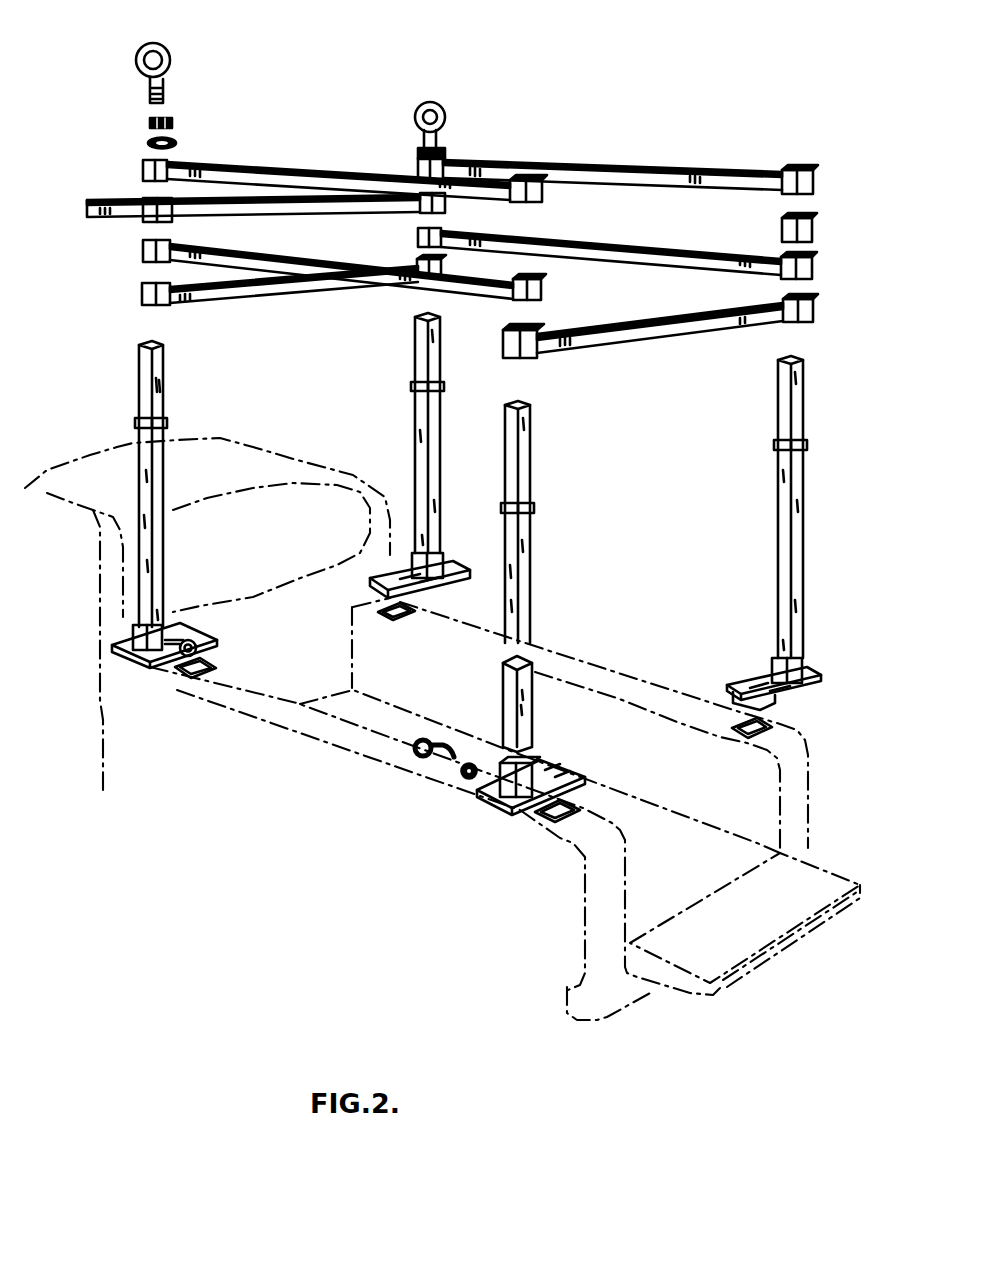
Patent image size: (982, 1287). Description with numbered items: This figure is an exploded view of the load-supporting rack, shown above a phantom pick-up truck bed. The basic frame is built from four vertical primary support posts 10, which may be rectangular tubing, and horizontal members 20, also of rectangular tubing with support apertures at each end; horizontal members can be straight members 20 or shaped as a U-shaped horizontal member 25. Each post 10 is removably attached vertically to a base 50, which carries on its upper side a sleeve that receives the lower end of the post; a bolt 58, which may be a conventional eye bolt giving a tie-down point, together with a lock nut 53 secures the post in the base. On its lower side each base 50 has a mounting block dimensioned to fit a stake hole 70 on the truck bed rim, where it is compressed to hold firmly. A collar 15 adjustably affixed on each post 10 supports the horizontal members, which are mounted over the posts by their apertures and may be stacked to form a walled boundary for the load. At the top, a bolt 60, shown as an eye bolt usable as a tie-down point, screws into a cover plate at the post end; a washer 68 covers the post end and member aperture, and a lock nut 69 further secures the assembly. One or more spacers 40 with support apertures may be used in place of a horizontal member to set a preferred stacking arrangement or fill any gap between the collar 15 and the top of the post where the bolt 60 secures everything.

The primary support post 10 is at (163, 373).
The collar 15 is at (168, 422).
The horizontal member 20 is at (641, 184).
The U-shaped horizontal member 25 is at (135, 200).
The spacer 40 is at (814, 228).
The base 50 is at (137, 657).
The lock nut 53 is at (463, 778).
The bolt 58 is at (417, 761).
The bolt 60 is at (173, 48).
The washer 68 is at (178, 141).
The lock nut 69 is at (174, 123).
The stake hole 70 is at (216, 666).